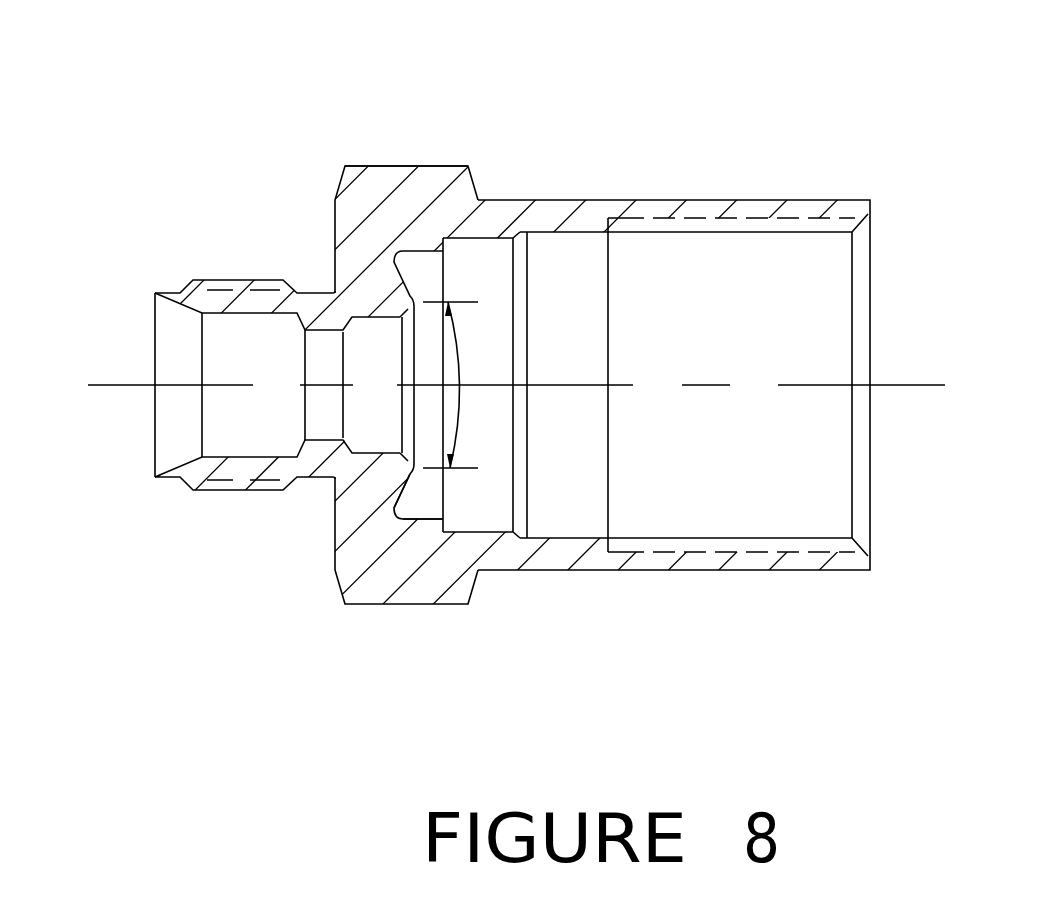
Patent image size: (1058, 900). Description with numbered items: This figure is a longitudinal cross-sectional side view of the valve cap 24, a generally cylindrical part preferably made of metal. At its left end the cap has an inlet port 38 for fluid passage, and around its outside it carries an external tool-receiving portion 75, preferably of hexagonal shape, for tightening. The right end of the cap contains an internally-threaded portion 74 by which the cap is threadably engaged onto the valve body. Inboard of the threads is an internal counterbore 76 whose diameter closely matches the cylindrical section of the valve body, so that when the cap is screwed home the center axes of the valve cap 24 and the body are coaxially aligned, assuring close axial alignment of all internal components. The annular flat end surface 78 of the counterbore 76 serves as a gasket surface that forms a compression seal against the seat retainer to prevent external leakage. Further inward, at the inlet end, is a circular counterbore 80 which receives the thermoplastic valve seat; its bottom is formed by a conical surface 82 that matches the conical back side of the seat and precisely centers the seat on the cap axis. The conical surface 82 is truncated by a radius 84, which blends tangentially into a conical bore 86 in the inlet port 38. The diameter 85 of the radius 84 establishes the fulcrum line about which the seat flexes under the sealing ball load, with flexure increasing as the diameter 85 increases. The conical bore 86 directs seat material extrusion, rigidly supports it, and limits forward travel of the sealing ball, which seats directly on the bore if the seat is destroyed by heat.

The valve cap 24 is at (362, 162).
The inlet port 38 is at (155, 352).
The internally-threaded portion 74 is at (705, 233).
The external tool-receiving portion 75 is at (420, 167).
The internal counterbore 76 is at (482, 238).
The annular flat end surface 78 is at (443, 243).
The circular counterbore 80 is at (424, 520).
The conical surface 82 is at (403, 489).
The radius 84 is at (413, 470).
The diameter 85 is at (465, 398).
The conical bore 86 is at (415, 306).